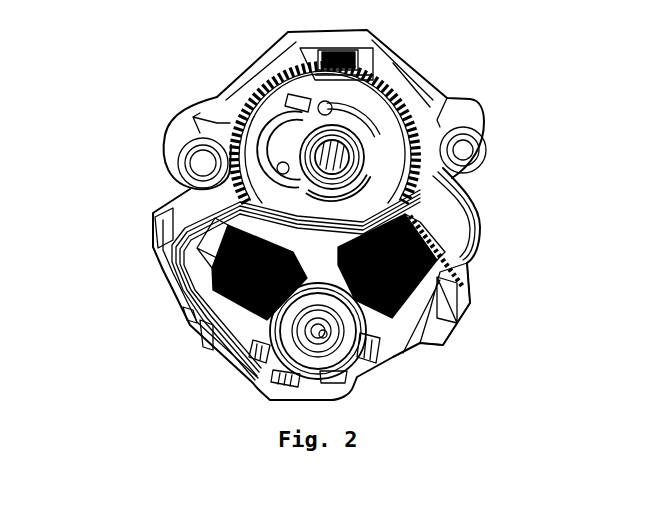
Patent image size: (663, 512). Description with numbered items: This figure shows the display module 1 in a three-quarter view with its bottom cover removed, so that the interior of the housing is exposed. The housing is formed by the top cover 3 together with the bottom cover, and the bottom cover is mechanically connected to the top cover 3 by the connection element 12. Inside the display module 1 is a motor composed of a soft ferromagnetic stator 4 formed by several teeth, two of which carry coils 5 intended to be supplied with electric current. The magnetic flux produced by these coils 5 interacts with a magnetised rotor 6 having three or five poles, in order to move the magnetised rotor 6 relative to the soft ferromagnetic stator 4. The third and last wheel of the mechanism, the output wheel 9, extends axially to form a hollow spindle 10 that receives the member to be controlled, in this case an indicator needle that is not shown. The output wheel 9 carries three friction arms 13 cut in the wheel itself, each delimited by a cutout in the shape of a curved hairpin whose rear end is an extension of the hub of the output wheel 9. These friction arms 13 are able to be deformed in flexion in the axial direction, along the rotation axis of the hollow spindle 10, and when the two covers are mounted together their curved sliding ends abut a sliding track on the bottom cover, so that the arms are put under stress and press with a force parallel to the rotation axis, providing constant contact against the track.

The display module 1 is at (468, 94).
The top cover 3 is at (485, 251).
The soft ferromagnetic stator 4 is at (400, 358).
The coils 5 is at (240, 302).
The magnetised rotor 6 is at (281, 365).
The output wheel 9 is at (392, 113).
The hollow spindle 10 is at (352, 167).
The connection element 12 is at (306, 56).
The friction arms 13 is at (275, 154).